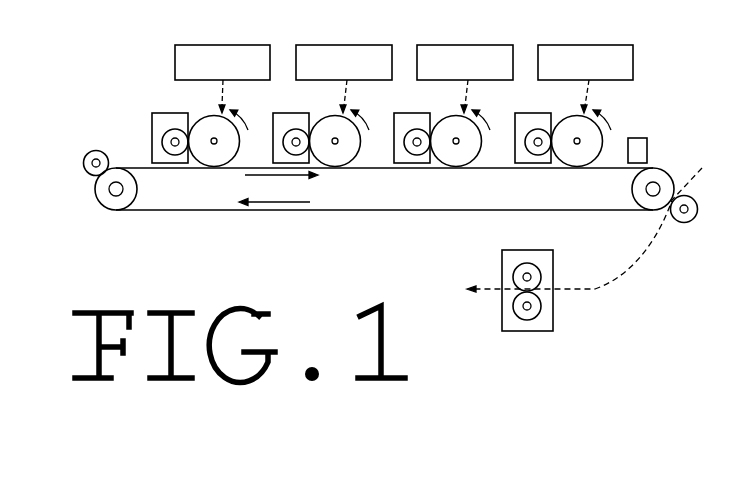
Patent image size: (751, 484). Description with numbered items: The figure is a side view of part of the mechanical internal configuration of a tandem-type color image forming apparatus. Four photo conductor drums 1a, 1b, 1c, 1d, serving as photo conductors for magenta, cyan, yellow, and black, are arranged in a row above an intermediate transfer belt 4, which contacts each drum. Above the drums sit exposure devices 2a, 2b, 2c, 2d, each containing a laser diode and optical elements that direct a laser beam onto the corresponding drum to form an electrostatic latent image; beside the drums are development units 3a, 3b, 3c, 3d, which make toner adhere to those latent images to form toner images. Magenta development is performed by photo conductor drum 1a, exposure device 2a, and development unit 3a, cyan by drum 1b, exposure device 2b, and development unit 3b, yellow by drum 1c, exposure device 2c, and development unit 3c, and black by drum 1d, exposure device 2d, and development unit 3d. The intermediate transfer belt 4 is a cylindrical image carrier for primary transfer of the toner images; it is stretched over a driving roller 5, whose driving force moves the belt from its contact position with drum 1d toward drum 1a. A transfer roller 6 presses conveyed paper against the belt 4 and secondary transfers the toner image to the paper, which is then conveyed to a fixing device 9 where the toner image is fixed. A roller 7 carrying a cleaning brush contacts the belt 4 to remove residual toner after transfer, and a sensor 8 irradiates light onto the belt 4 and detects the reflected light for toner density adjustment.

The photo conductor drum 1a is at (600, 158).
The photo conductor drum 1b is at (479, 158).
The photo conductor drum 1c is at (358, 158).
The photo conductor drum 1d is at (237, 158).
The exposure device 2a is at (588, 45).
The exposure device 2b is at (469, 45).
The exposure device 2c is at (347, 45).
The exposure device 2d is at (226, 45).
The development unit 3a is at (531, 123).
The development unit 3b is at (415, 113).
The development unit 3c is at (293, 113).
The development unit 3d is at (172, 113).
The intermediate transfer belt 4 is at (432, 211).
The driving roller 5 is at (101, 203).
The transfer roller 6 is at (694, 219).
The roller 7 is at (91, 152).
The sensor 8 is at (635, 137).
The fixing device 9 is at (527, 332).